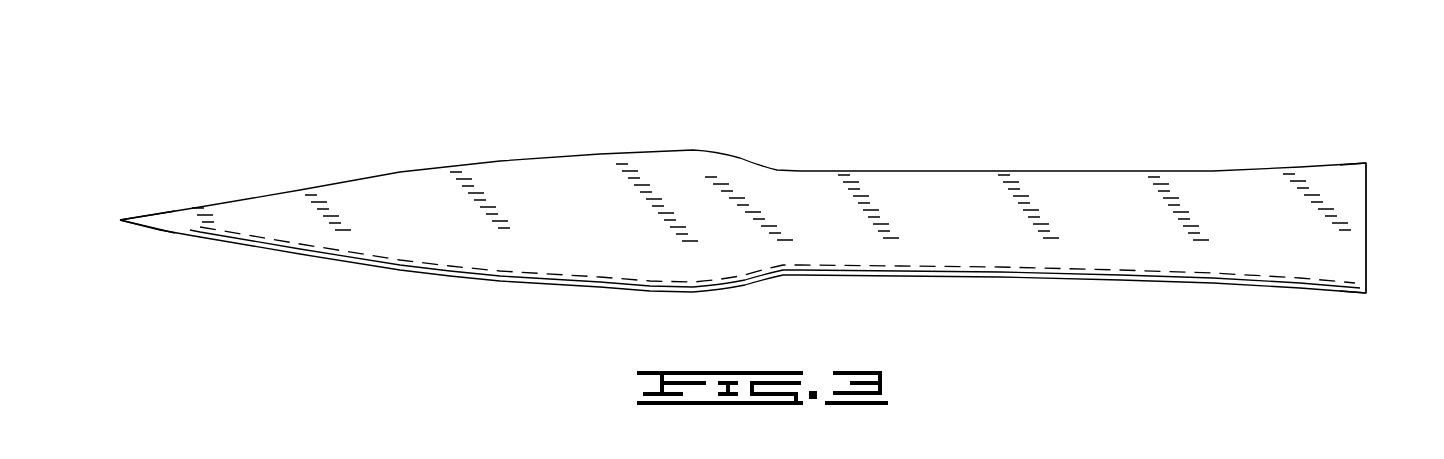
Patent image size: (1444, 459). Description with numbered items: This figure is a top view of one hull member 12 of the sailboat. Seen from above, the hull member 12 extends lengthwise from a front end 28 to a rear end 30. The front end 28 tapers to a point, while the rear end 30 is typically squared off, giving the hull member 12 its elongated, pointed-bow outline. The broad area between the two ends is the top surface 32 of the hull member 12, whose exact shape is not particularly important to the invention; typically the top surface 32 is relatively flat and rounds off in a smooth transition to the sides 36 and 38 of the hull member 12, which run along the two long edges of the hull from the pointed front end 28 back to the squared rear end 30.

The hull member 12 is at (745, 195).
The front end 28 is at (120, 220).
The rear end 30 is at (1367, 272).
The top surface 32 is at (927, 215).
The side 36 is at (628, 288).
The side 38 is at (628, 152).